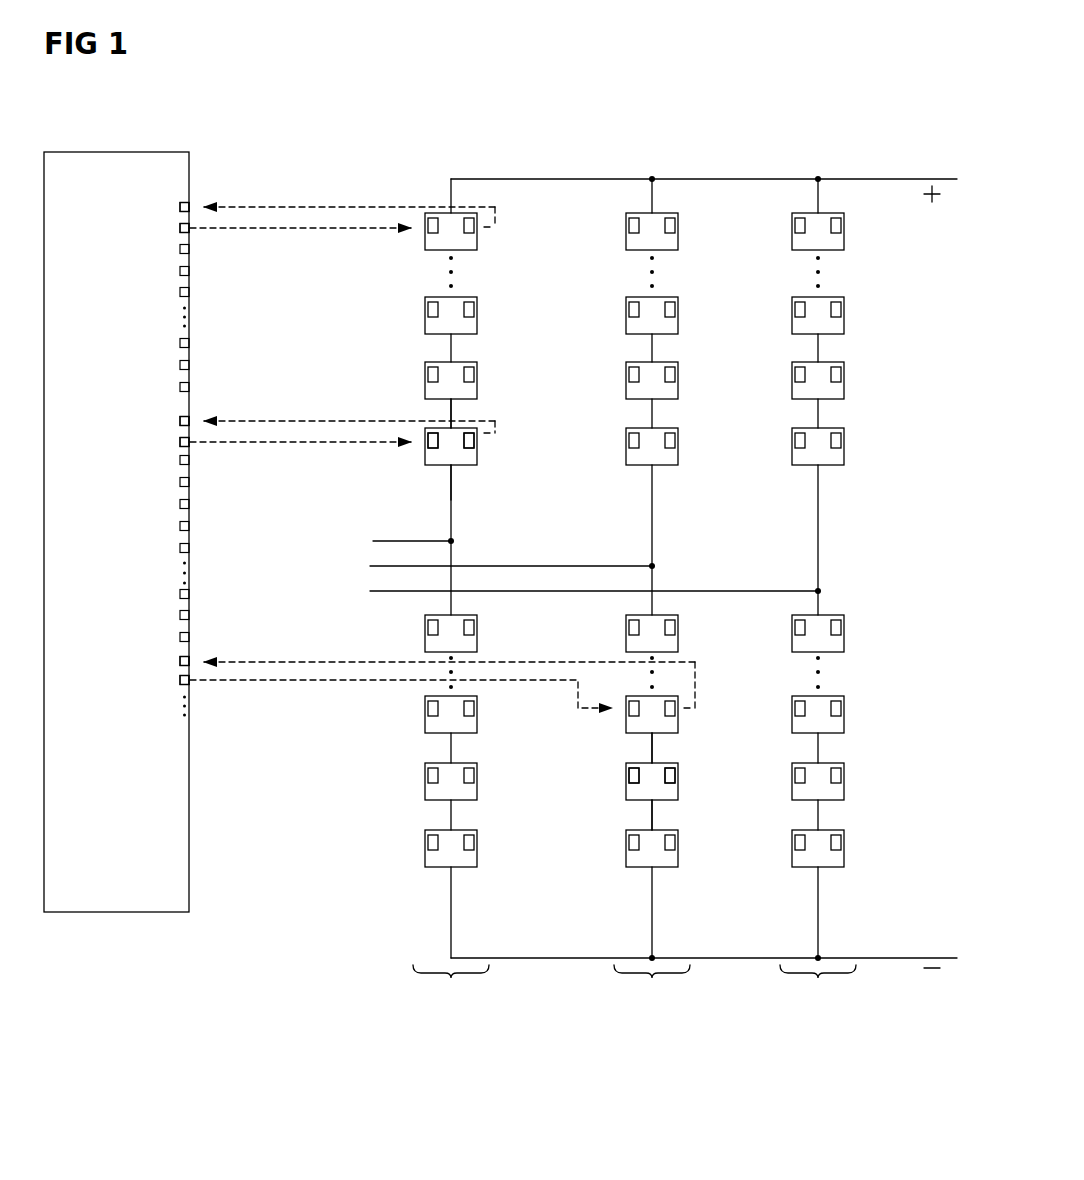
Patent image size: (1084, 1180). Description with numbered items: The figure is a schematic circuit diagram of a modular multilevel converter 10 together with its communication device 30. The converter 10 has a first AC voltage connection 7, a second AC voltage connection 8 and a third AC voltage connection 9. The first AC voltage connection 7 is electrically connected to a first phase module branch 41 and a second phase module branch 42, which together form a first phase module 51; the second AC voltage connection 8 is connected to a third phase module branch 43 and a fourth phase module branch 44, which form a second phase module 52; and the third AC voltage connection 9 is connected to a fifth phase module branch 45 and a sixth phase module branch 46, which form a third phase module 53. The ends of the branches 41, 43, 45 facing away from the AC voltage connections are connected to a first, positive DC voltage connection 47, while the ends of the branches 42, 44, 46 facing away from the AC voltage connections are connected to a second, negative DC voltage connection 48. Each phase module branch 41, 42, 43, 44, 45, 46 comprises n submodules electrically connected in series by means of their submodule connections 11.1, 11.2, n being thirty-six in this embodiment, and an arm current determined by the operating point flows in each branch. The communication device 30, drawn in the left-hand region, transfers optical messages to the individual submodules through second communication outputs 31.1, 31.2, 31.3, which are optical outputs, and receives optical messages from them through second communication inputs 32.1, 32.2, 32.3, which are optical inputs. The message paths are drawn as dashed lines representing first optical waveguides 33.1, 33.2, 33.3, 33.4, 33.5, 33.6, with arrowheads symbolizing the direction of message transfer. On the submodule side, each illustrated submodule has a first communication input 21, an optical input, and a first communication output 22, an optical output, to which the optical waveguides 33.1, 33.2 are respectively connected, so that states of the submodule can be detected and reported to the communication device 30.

The modular multilevel converter 10 is at (558, 148).
The communication device 30 is at (121, 152).
The second communication output 31.1 is at (180, 228).
The second communication output 31.2 is at (180, 442).
The second communication output 31.3 is at (180, 680).
The second communication input 32.1 is at (180, 207).
The second communication input 32.2 is at (180, 421).
The second communication input 32.3 is at (180, 661).
The first optical waveguide 33.1 is at (240, 228).
The first optical waveguide 33.2 is at (240, 207).
The first optical waveguide 33.3 is at (240, 442).
The first optical waveguide 33.4 is at (240, 421).
The first optical waveguide 33.5 is at (240, 680).
The first optical waveguide 33.6 is at (240, 662).
The first AC voltage connection 7 is at (440, 541).
The second AC voltage connection 8 is at (545, 566).
The third AC voltage connection 9 is at (687, 591).
The submodule connection 11.1 is at (451, 417).
The submodule connection 11.2 is at (478, 463).
The first communication input 21 is at (428, 445).
The first communication output 22 is at (477, 440).
The first phase module branch 41 is at (414, 476).
The second phase module branch 42 is at (440, 873).
The third phase module branch 43 is at (636, 478).
The fourth phase module branch 44 is at (638, 873).
The fifth phase module branch 45 is at (800, 478).
The sixth phase module branch 46 is at (805, 877).
The first DC voltage connection 47 is at (925, 179).
The second DC voltage connection 48 is at (925, 958).
The first phase module 51 is at (451, 988).
The second phase module 52 is at (652, 988).
The third phase module 53 is at (818, 988).